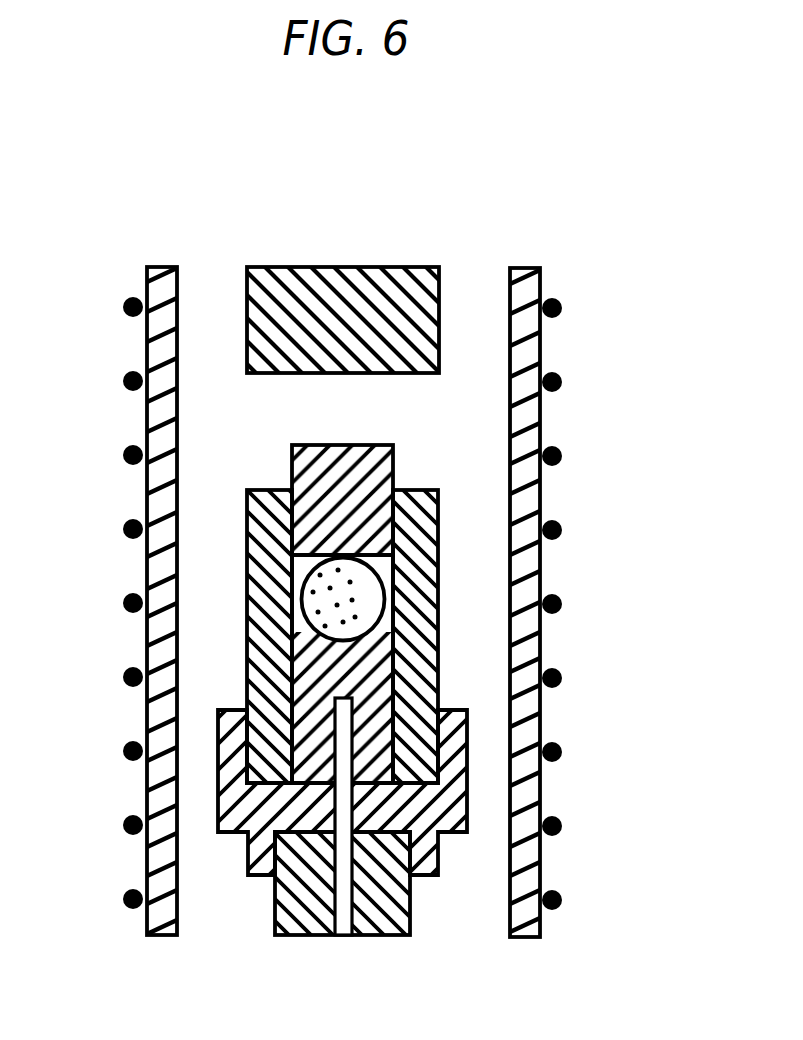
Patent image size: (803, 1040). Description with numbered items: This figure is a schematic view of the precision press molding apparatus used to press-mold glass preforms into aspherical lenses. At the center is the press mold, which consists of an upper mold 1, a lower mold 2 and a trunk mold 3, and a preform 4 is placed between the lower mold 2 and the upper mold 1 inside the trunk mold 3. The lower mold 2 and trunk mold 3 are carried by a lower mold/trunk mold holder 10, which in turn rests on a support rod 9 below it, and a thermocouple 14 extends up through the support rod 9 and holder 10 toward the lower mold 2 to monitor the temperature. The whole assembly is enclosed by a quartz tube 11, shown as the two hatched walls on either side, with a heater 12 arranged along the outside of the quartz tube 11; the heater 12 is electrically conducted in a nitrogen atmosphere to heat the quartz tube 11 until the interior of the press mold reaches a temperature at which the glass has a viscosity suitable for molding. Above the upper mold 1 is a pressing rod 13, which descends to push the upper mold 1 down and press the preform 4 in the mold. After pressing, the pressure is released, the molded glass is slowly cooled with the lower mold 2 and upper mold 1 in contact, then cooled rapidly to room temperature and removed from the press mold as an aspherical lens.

The upper mold 1 is at (397, 454).
The lower mold 2 is at (382, 758).
The trunk mold 3 is at (427, 690).
The preform 4 is at (380, 607).
The support rod 9 is at (405, 902).
The lower mold/trunk mold holder 10 is at (445, 810).
The quartz tube 11 is at (157, 492).
The heater 12 is at (128, 612).
The pressing rod 13 is at (358, 331).
The thermocouple 14 is at (342, 922).